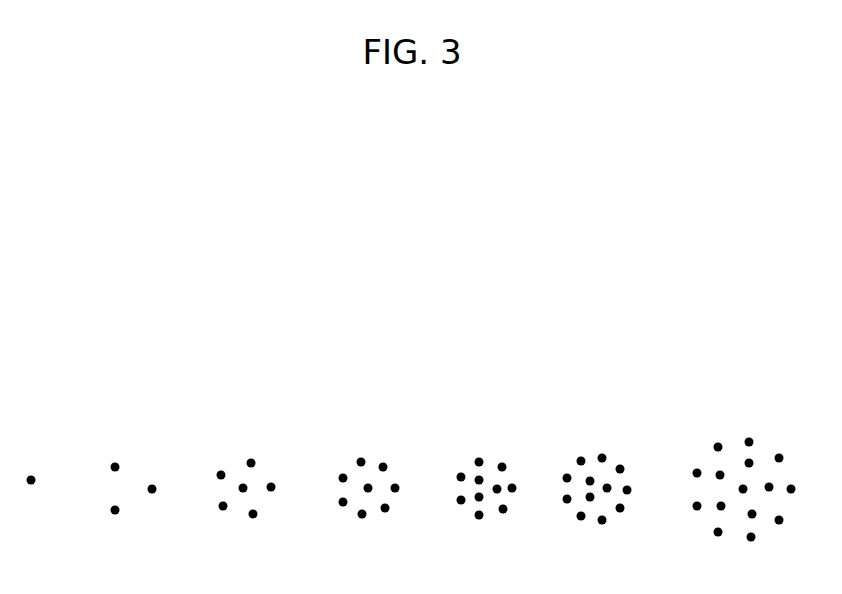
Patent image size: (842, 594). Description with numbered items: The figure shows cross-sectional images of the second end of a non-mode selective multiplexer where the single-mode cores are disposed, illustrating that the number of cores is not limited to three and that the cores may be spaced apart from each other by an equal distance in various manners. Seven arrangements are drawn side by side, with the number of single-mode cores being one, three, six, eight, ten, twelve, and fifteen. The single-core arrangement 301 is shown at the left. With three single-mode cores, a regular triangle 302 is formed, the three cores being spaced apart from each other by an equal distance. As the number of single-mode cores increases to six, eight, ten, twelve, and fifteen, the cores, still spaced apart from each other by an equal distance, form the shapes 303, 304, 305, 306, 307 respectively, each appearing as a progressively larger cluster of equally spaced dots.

The single-point pattern 301 is at (35, 458).
The regular triangle 302 is at (137, 460).
The shape formed by six single-mode cores 303 is at (252, 452).
The shape formed by eight single-mode cores 304 is at (372, 455).
The shape formed by ten single-mode cores 305 is at (492, 448).
The shape formed by twelve single-mode cores 306 is at (603, 442).
The shape formed by fifteen single-mode cores 307 is at (760, 425).